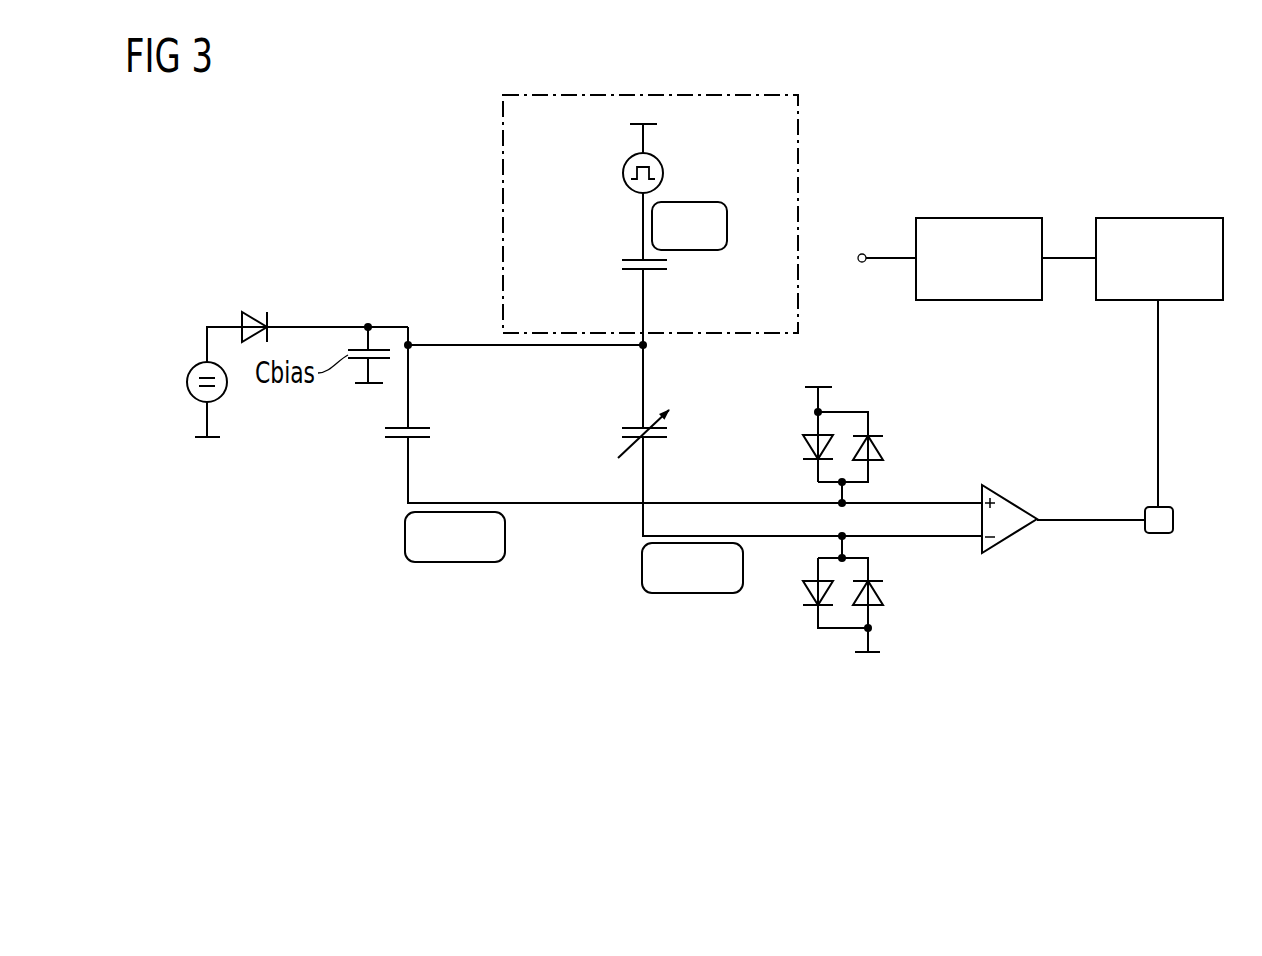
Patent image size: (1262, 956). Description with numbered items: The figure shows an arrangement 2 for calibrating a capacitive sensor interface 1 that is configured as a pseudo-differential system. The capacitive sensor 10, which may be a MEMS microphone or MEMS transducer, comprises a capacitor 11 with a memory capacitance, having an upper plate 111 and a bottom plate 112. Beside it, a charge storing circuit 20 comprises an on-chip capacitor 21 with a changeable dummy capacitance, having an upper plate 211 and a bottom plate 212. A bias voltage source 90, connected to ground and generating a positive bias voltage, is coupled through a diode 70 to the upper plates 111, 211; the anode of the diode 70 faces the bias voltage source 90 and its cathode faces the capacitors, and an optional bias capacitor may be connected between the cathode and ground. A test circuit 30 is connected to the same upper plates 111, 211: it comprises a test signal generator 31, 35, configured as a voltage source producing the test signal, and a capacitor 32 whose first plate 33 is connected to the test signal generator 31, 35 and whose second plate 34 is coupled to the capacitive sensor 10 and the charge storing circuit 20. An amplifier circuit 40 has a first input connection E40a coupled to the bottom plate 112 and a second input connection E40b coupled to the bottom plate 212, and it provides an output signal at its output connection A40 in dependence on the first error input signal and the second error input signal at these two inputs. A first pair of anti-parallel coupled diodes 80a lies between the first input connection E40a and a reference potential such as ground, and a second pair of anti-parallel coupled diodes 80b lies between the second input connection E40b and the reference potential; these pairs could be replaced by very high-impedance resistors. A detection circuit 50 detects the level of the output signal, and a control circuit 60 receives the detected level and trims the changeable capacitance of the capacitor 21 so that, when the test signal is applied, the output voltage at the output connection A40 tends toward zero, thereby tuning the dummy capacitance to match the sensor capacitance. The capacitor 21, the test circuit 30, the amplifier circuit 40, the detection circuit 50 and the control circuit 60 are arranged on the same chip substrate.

The capacitive sensor interface 1 is at (519, 585).
The arrangement 2 is at (701, 187).
The capacitive sensor 10 is at (419, 435).
The capacitor 11 is at (419, 435).
The upper plate 111 is at (415, 428).
The bottom plate 112 is at (418, 440).
The charge storing circuit 20 is at (662, 435).
The capacitor 21 is at (662, 435).
The upper plate 211 is at (637, 428).
The bottom plate 212 is at (652, 440).
The test circuit 30 is at (650, 187).
The test signal generator 31 is at (612, 170).
The pulse generator 35 is at (622, 178).
The capacitor 32 is at (622, 266).
The first plate 33 is at (638, 258).
The second plate 34 is at (655, 272).
The amplifier circuit 40 is at (1085, 522).
The first input connection E40a is at (980, 500).
The second input connection E40b is at (980, 545).
The output connection A40 is at (1160, 535).
The detection circuit 50 is at (1160, 218).
The control circuit 60 is at (980, 218).
The diode 70 is at (258, 312).
The first pair of anti-parallel coupled diodes 80a is at (859, 395).
The second pair of anti-parallel coupled diodes 80b is at (833, 648).
The bias voltage source 90 is at (195, 365).